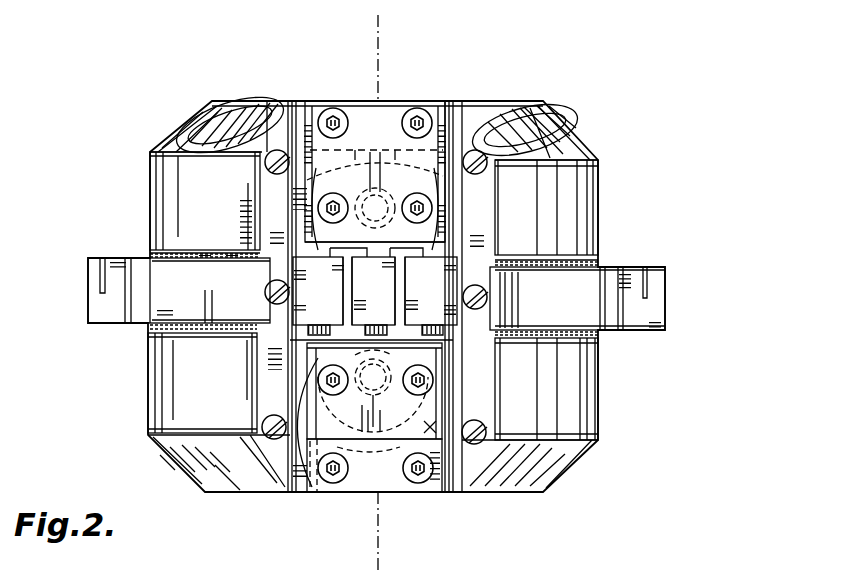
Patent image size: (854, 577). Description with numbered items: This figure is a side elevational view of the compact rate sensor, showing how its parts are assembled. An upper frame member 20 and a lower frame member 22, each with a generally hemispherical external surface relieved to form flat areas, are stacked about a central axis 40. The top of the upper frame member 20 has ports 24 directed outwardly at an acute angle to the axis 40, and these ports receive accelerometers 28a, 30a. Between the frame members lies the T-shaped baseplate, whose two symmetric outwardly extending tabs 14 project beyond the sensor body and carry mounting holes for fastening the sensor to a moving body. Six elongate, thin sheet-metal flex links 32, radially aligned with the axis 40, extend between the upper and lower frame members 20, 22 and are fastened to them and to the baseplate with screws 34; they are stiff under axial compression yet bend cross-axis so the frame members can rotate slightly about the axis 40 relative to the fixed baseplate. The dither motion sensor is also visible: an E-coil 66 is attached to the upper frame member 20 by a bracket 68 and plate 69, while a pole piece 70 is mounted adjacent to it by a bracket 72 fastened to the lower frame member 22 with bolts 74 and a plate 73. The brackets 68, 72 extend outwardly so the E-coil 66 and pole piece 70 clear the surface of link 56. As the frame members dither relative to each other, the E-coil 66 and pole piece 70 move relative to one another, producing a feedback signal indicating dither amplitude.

The tab 14 is at (100, 302).
The upper frame member 20 is at (160, 174).
The lower frame member 22 is at (155, 386).
The port 24 is at (208, 110).
The accelerometer 28a is at (500, 123).
The accelerometer 30a is at (243, 116).
The flex link 32 is at (262, 213).
The screw 34 is at (290, 140).
The axis 40 is at (388, 32).
The link 56 is at (296, 492).
The E-coil 66 is at (437, 273).
The bracket 68 is at (392, 113).
The plate 69 is at (362, 156).
The pole piece 70 is at (450, 347).
The bracket 72 is at (357, 478).
The plate 73 is at (440, 457).
The bolt 74 is at (423, 196).